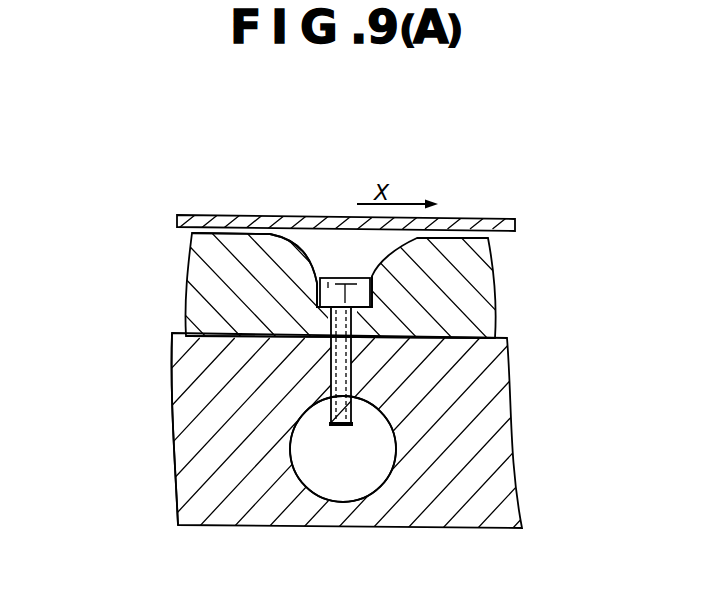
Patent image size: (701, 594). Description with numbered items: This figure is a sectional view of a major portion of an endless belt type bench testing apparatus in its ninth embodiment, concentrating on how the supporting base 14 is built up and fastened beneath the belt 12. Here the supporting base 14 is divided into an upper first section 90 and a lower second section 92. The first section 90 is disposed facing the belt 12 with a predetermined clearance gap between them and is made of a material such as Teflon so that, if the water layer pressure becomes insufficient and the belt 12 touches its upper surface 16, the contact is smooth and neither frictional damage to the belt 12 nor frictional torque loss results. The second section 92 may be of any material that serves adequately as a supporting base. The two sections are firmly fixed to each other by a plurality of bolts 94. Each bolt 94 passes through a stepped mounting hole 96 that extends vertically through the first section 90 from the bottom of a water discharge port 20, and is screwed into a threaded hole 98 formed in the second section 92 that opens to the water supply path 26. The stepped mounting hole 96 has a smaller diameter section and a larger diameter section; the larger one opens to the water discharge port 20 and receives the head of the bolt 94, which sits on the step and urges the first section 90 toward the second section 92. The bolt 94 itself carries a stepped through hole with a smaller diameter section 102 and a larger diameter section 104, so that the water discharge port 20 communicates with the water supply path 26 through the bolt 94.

The belt 12 is at (492, 227).
The supporting base 14 is at (140, 320).
The guide surface 16 is at (228, 240).
The water discharge port 20 is at (320, 248).
The water supply path 26 is at (345, 487).
The first section 90 is at (480, 277).
The second section 92 is at (497, 385).
The bolt 94 is at (315, 265).
The stepped mounting hole 96 is at (440, 317).
The threaded hole 98 is at (351, 388).
The smaller diameter section 102 is at (345, 425).
The larger diameter section 104 is at (342, 283).